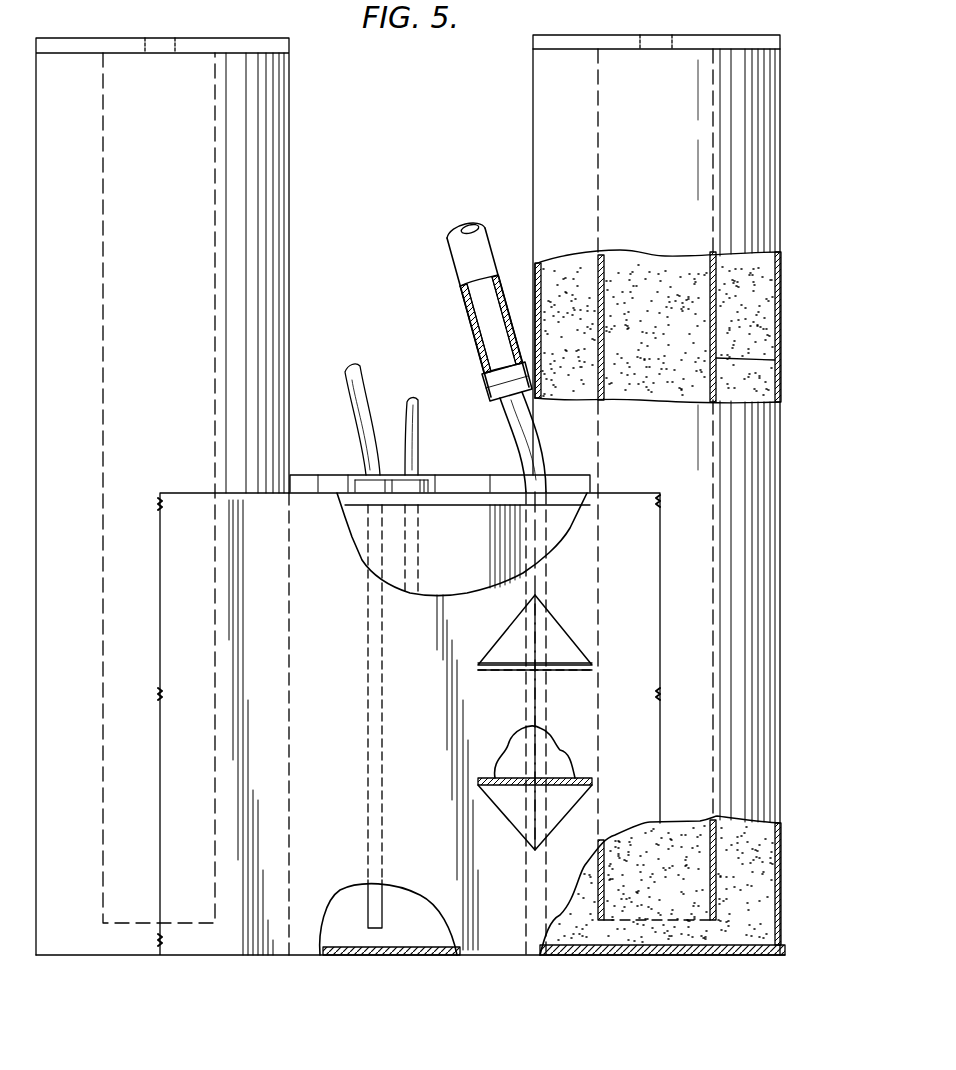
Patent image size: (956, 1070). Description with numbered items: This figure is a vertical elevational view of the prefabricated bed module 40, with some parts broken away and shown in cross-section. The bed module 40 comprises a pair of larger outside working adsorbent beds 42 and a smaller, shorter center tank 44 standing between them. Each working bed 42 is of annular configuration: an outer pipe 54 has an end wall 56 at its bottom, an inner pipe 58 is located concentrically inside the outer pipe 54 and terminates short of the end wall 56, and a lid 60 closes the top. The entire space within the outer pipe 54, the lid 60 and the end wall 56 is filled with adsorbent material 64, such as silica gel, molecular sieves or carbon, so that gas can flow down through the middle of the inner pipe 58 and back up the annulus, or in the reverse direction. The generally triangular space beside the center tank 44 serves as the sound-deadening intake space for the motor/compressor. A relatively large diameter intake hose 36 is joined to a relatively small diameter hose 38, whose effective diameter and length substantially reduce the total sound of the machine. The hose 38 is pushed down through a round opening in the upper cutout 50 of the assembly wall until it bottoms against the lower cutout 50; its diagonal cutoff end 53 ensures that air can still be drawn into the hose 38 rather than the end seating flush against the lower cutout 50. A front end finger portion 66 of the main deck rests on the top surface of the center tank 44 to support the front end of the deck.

The intake hose 36 is at (467, 317).
The hose 38 is at (524, 428).
The bed module 40 is at (308, 367).
The working adsorbent bed 42 is at (290, 122).
The center tank 44 is at (320, 478).
The cutout 50 is at (525, 780).
The diagonal cutoff end 53 is at (540, 775).
The outer pipe 54 is at (782, 292).
The end wall 56 is at (755, 945).
The inner pipe 58 is at (775, 360).
The lid 60 is at (697, 36).
The adsorbent material 64 is at (758, 315).
The front end finger portion 66 is at (455, 480).